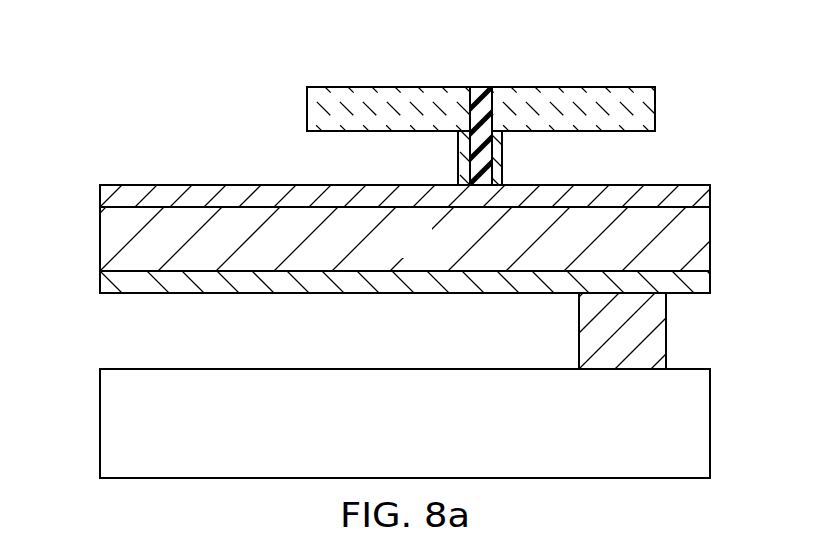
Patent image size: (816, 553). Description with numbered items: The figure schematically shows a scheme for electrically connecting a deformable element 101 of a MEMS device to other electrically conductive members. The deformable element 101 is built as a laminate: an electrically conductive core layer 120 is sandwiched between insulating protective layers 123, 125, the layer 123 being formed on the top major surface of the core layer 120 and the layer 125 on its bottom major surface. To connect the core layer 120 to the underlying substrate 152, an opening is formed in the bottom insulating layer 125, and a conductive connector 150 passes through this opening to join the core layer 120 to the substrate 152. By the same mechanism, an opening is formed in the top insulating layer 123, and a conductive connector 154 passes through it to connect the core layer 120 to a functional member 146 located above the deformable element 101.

The deformable element 101 is at (204, 70).
The functional member 146 is at (657, 110).
The conductive connector 154 is at (482, 86).
The insulating protective layer 123 is at (100, 195).
The electrically conductive core layer 120 is at (427, 251).
The insulating protective layer 125 is at (100, 283).
The conductive connector 150 is at (667, 328).
The substrate 152 is at (425, 436).